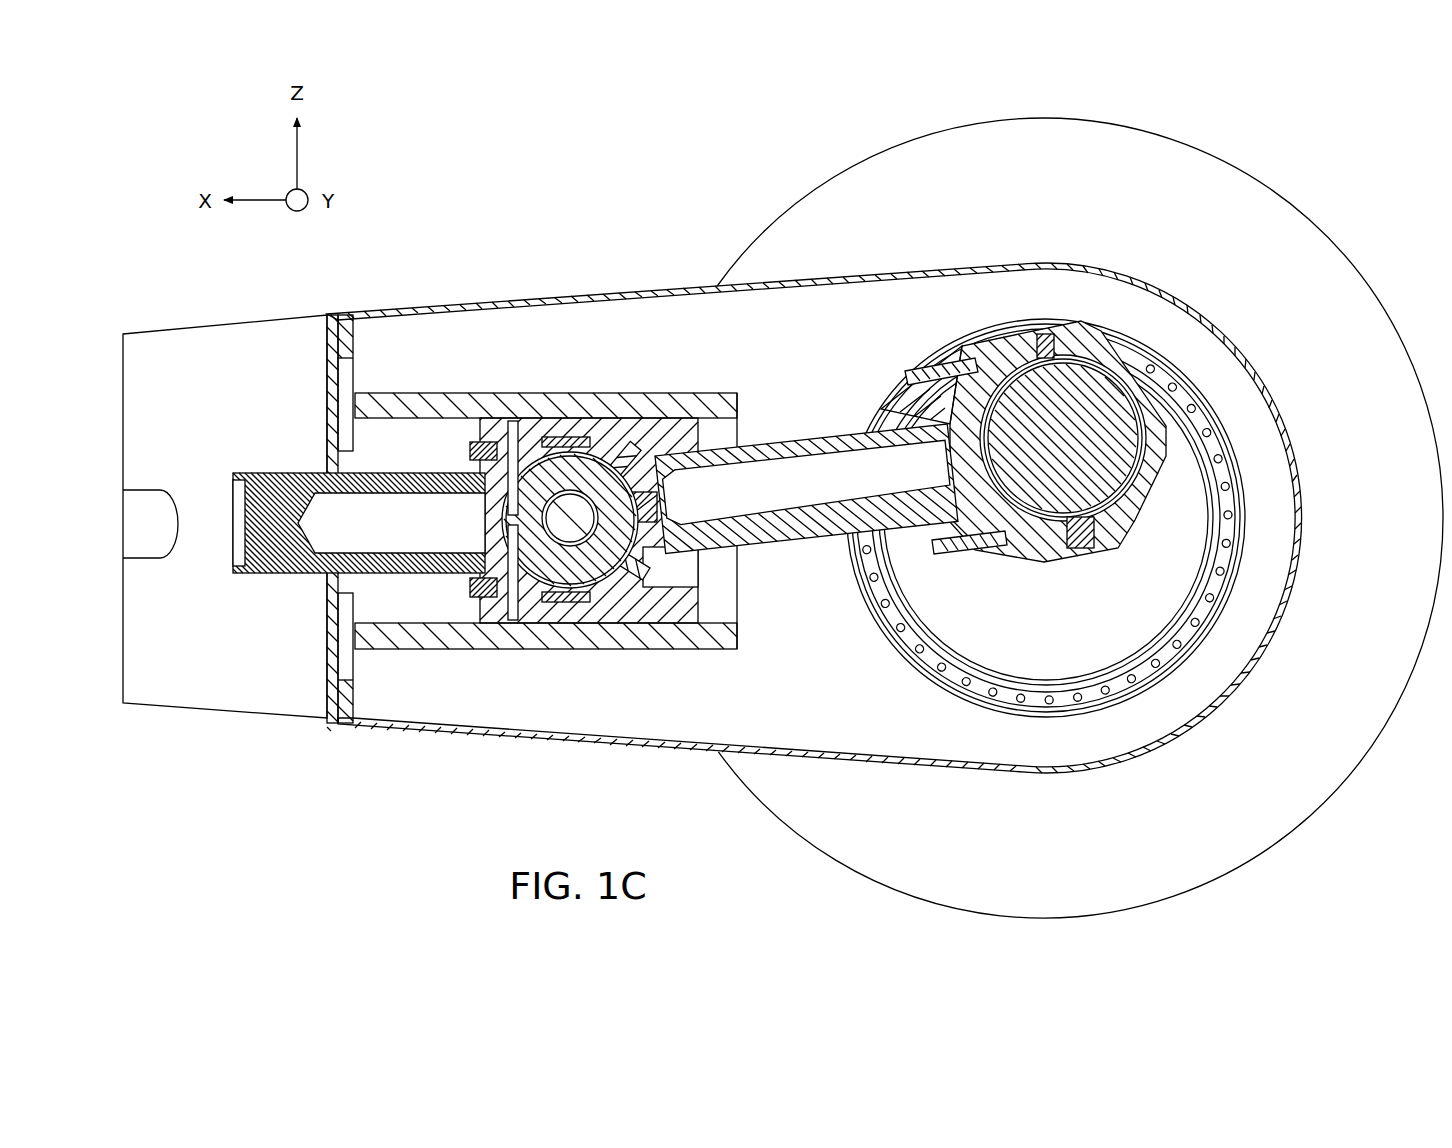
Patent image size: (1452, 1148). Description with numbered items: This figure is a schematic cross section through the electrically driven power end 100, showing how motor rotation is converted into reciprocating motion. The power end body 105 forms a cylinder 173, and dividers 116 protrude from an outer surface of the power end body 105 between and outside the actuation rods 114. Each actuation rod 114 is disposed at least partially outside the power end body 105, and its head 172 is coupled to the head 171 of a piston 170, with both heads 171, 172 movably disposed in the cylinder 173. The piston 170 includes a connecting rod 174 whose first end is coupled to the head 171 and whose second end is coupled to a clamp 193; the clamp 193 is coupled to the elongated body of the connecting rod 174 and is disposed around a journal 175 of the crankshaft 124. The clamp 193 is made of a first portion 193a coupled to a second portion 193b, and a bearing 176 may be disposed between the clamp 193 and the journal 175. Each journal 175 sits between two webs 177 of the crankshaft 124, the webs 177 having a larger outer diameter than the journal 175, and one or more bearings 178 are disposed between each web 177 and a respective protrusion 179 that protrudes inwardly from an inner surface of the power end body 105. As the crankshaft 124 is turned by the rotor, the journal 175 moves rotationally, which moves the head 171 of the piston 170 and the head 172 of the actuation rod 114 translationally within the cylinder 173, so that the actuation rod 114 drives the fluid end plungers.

The power end 100 is at (583, 163).
The power end body 105 is at (501, 300).
The actuation rod 114 is at (282, 548).
The divider 116 is at (165, 358).
The crankshaft 124 is at (1135, 722).
The piston 170 is at (638, 448).
The head of piston 171 is at (545, 437).
The head of actuation rod 172 is at (478, 443).
The cylinder 173 is at (390, 402).
The connecting rod 174 is at (767, 528).
The journal 175 is at (1072, 392).
The bearing 176 is at (1150, 498).
The web 177 is at (1258, 472).
The bearing 178 is at (1243, 498).
The protrusion 179 is at (1258, 572).
The clamp 193 is at (1170, 458).
The first portion of clamp 193a is at (996, 345).
The second portion of clamp 193b is at (1105, 365).